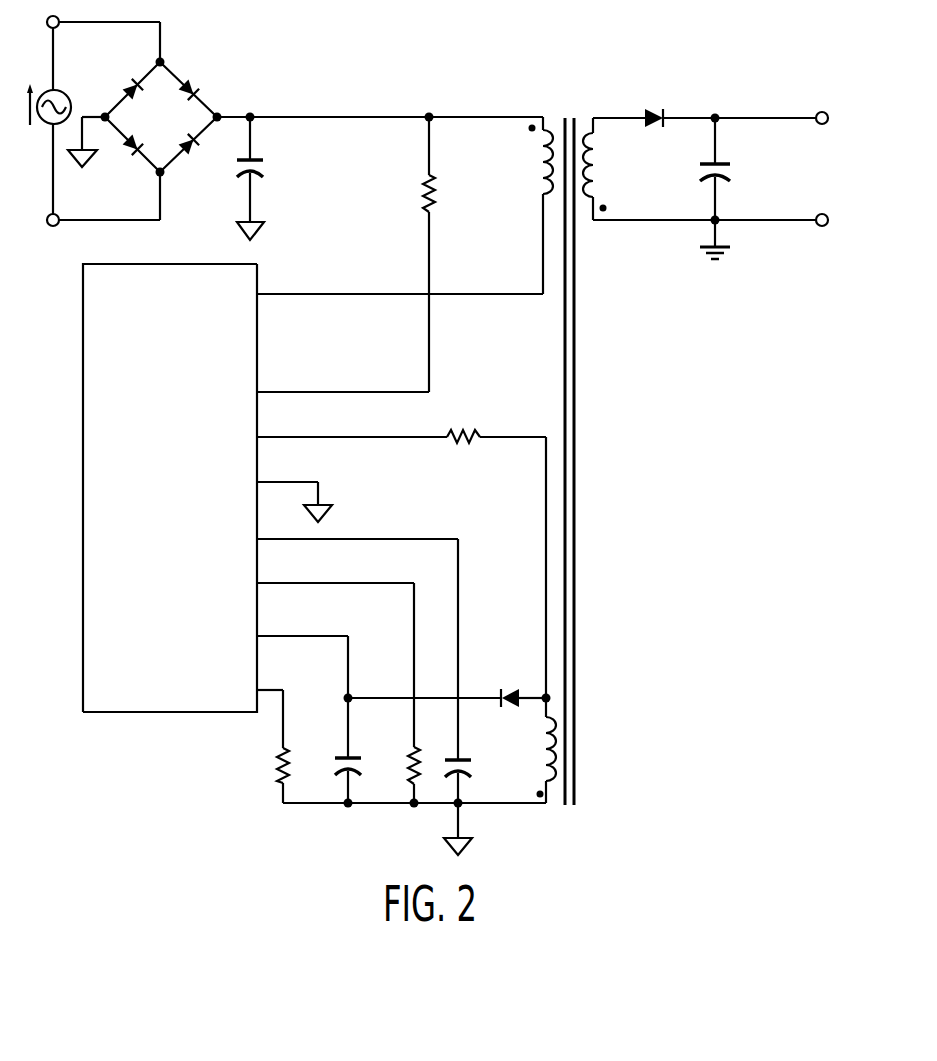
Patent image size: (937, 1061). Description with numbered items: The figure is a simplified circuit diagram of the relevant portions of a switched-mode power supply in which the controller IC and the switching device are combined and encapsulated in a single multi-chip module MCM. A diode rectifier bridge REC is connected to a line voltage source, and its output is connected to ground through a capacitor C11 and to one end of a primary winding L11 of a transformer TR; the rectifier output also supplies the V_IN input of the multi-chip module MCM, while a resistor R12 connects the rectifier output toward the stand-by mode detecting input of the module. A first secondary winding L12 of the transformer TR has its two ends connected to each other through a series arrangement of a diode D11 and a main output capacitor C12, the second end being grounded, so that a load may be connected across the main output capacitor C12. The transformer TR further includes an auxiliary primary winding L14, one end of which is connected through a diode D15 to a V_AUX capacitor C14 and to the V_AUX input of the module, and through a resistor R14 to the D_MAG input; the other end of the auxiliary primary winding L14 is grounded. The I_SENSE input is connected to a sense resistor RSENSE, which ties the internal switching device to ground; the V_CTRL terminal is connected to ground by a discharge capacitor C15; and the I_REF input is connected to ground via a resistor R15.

The diode rectifier bridge REC is at (192, 90).
The capacitor C11 is at (266, 178).
The resistor R12 is at (446, 254).
The transformer TR is at (562, 434).
The primary winding L11 is at (533, 205).
The first secondary winding L12 is at (602, 169).
The auxiliary primary winding L14 is at (538, 750).
The diode D11 is at (653, 103).
The main output capacitor C12 is at (698, 187).
The multi-chip module MCM is at (170, 488).
The resistor R14 is at (401, 550).
The diode D15 is at (508, 684).
The sense resistor RSENSE is at (253, 746).
The V_AUX capacitor C14 is at (338, 750).
The resistor R15 is at (397, 693).
The discharge capacitor C15 is at (474, 697).